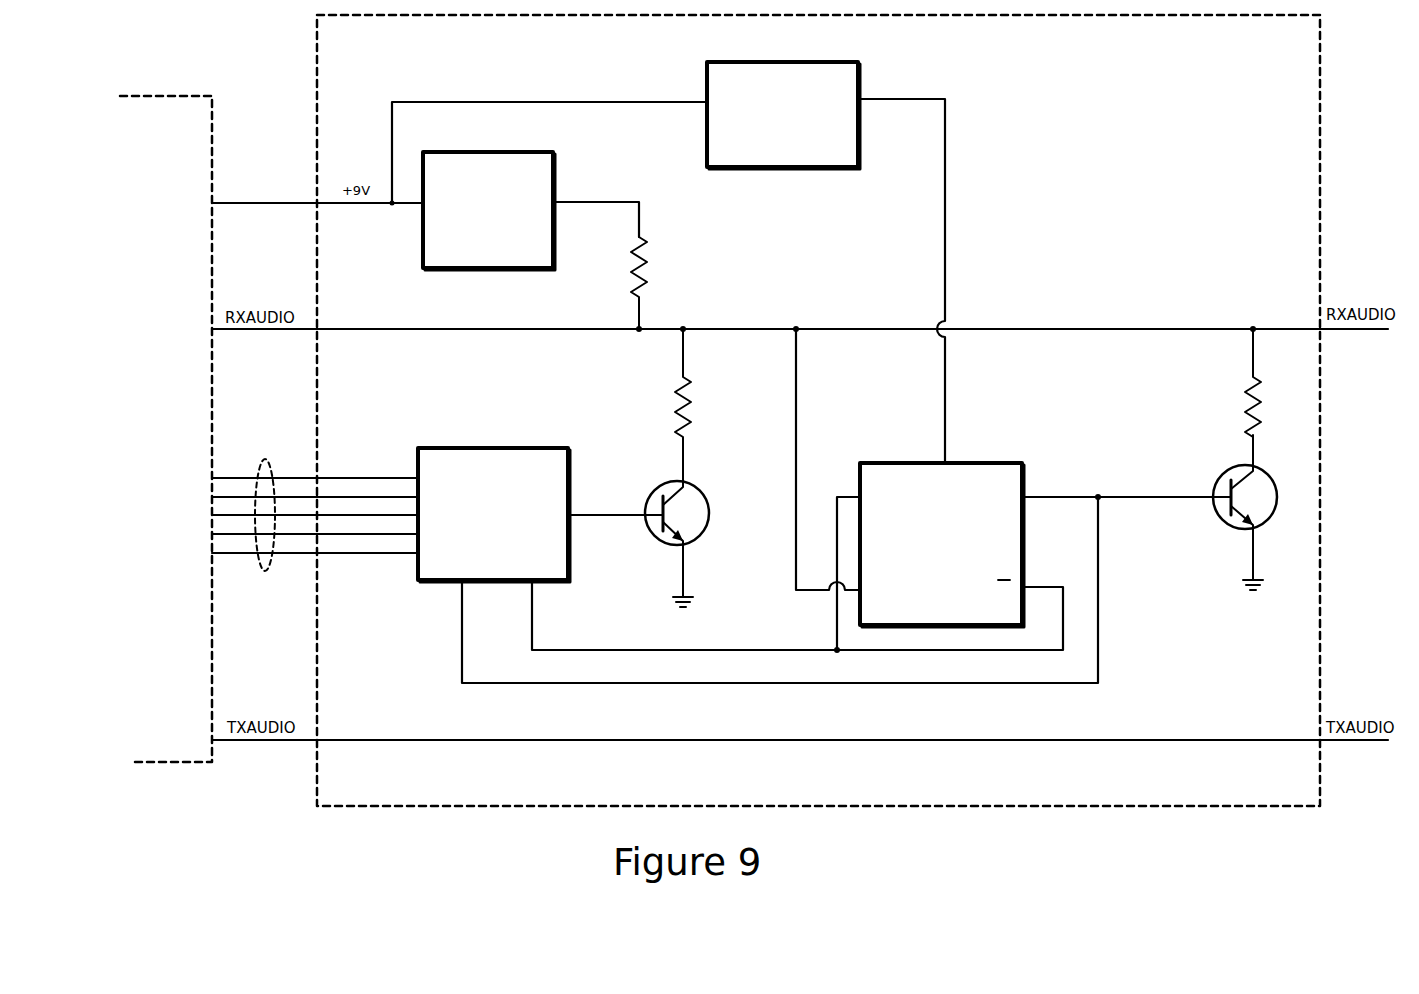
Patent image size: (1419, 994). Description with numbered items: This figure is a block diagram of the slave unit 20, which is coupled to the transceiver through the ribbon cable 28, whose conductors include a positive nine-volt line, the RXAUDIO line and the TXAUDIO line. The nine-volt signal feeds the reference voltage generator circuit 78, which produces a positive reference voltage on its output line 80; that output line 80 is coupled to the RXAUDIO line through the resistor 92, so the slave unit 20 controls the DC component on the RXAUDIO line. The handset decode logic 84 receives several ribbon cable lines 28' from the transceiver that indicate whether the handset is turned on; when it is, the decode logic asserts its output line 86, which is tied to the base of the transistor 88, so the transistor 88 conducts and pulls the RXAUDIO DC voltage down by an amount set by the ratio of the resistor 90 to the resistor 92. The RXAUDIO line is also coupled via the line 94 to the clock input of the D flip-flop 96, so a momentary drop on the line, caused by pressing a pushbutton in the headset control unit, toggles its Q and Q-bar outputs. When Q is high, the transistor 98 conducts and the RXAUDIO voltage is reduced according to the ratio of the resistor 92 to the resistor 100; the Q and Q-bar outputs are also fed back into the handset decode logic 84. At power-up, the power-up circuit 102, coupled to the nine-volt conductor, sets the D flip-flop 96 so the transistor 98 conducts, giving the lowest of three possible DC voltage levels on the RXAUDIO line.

The slave unit 20 is at (183, 95).
The ribbon cable 28 is at (315, 664).
The ribbon cable lines 28' is at (260, 553).
The reference voltage generator circuit 78 is at (558, 166).
The output line 80 is at (645, 206).
The handset decode logic 84 is at (570, 468).
The output line 86 is at (614, 517).
The transistor 88 is at (703, 535).
The resistor 90 is at (695, 413).
The resistor 92 is at (646, 278).
The line 94 is at (797, 397).
The D flip-flop 96 is at (1010, 459).
The transistor 98 is at (1228, 524).
The resistor 100 is at (1238, 412).
The power-up circuit 102 is at (835, 168).